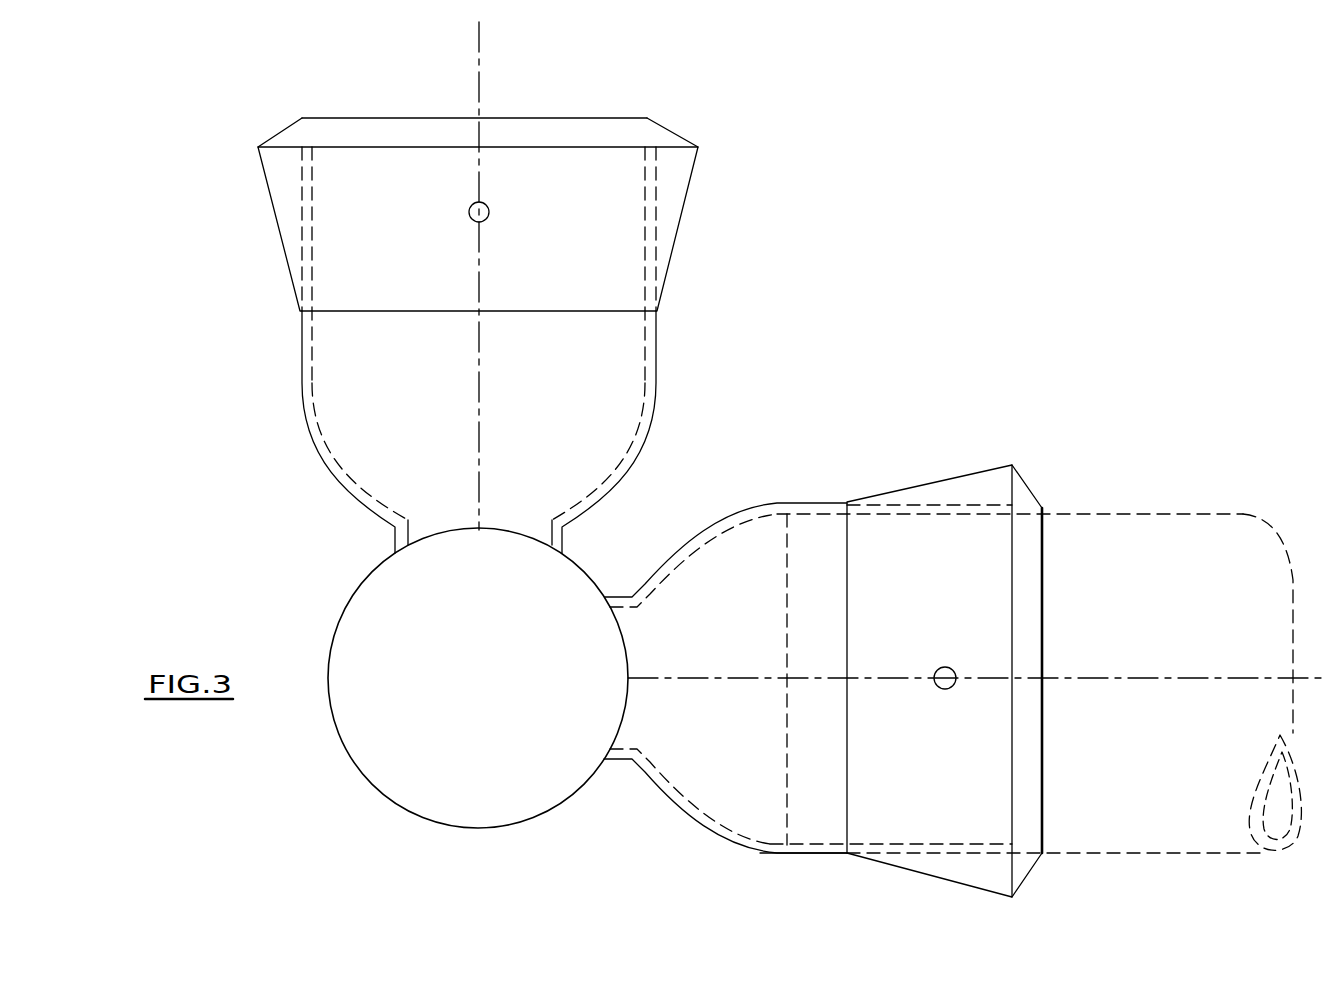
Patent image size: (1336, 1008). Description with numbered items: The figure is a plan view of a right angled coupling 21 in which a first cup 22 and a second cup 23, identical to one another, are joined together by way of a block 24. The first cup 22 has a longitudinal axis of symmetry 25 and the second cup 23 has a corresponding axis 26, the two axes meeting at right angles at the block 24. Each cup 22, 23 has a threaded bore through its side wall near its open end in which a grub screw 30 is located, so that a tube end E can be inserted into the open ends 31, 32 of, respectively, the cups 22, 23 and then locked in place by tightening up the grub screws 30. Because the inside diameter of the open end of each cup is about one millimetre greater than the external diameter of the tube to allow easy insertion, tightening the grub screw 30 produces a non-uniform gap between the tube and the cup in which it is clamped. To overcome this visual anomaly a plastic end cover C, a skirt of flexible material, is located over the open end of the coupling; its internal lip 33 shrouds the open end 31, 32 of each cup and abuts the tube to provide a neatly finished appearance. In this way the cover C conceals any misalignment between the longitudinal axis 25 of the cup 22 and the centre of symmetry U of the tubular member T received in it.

The right angled coupling 21 is at (678, 827).
The first cup 22 is at (802, 795).
The second cup 23 is at (585, 448).
The block 24 is at (496, 694).
The longitudinal axis of symmetry 25 is at (1060, 678).
The axis 26 is at (479, 393).
The grub screw 30 is at (489, 209).
The open end 31 is at (1042, 585).
The open end 32 is at (647, 118).
The internal lip 33 is at (302, 117).
The end cover C is at (332, 280).
The tube end E is at (825, 835).
The tubular member T is at (1237, 578).
The centre of symmetry U is at (1240, 678).